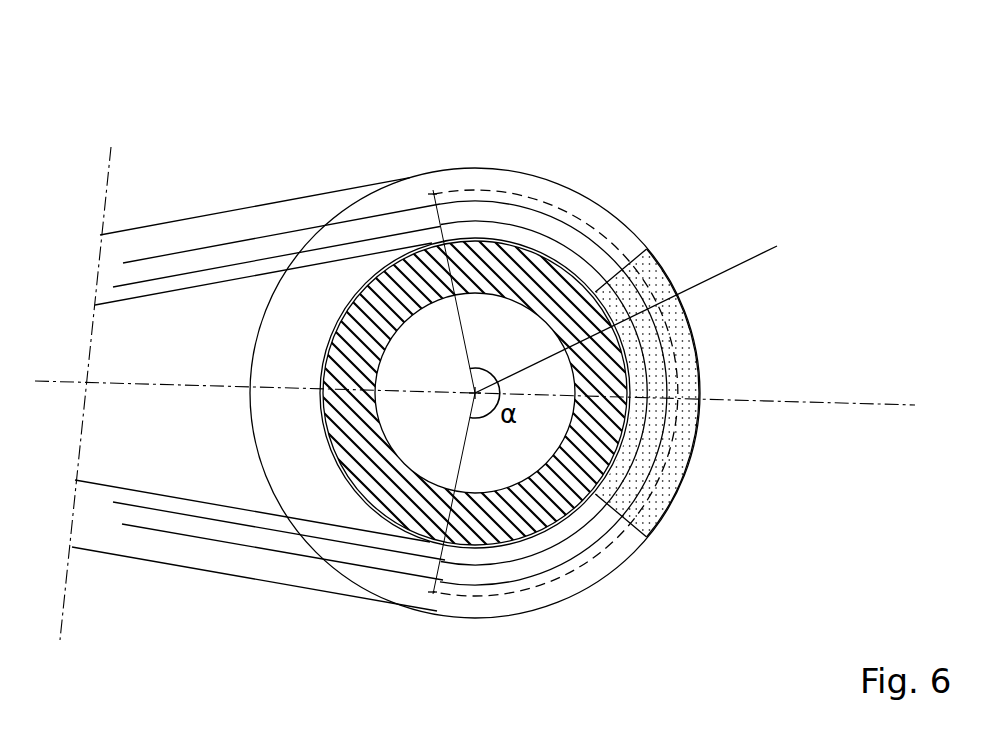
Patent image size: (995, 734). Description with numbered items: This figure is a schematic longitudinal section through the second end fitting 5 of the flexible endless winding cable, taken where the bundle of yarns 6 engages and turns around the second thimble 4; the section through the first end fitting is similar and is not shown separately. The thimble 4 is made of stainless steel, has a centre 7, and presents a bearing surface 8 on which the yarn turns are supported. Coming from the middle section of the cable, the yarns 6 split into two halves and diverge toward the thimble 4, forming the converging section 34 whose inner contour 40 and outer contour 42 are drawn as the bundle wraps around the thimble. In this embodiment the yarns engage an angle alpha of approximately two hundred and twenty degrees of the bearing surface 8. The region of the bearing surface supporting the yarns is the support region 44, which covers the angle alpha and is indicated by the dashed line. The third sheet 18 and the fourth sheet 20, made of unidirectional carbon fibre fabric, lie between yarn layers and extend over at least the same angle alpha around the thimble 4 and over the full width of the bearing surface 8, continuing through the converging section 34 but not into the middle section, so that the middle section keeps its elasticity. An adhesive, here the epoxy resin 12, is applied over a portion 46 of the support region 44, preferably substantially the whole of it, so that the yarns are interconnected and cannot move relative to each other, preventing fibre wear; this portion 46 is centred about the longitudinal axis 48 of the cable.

The second thimble 4 is at (456, 115).
The second end fitting 5 is at (334, 90).
The yarns 6 is at (657, 512).
The centre 7 is at (651, 313).
The bearing surface 8 is at (318, 383).
The epoxy resin 12 is at (720, 533).
The third sheet 18 is at (533, 558).
The fourth sheet 20 is at (483, 587).
The converging section 34 is at (217, 180).
The inner contour 40 is at (547, 273).
The outer contour 42 is at (703, 392).
The support region 44 is at (625, 247).
The portion 46 is at (667, 373).
The longitudinal axis 48 is at (822, 400).